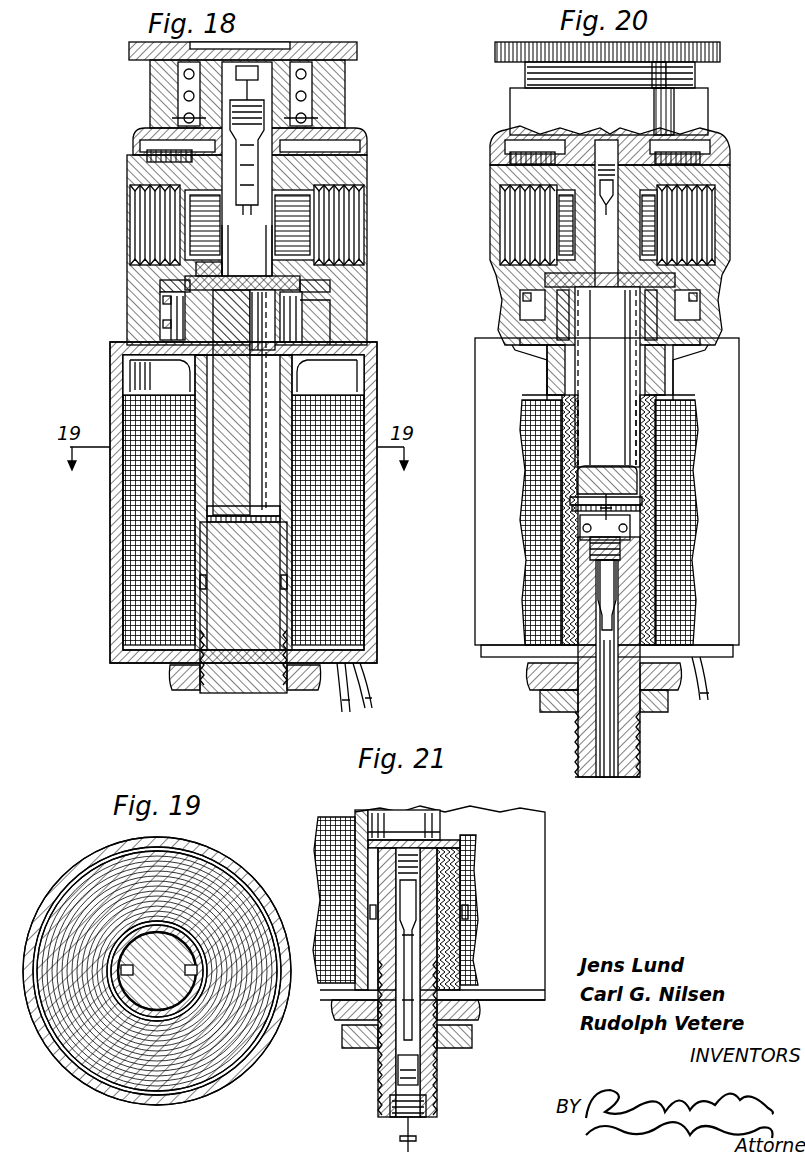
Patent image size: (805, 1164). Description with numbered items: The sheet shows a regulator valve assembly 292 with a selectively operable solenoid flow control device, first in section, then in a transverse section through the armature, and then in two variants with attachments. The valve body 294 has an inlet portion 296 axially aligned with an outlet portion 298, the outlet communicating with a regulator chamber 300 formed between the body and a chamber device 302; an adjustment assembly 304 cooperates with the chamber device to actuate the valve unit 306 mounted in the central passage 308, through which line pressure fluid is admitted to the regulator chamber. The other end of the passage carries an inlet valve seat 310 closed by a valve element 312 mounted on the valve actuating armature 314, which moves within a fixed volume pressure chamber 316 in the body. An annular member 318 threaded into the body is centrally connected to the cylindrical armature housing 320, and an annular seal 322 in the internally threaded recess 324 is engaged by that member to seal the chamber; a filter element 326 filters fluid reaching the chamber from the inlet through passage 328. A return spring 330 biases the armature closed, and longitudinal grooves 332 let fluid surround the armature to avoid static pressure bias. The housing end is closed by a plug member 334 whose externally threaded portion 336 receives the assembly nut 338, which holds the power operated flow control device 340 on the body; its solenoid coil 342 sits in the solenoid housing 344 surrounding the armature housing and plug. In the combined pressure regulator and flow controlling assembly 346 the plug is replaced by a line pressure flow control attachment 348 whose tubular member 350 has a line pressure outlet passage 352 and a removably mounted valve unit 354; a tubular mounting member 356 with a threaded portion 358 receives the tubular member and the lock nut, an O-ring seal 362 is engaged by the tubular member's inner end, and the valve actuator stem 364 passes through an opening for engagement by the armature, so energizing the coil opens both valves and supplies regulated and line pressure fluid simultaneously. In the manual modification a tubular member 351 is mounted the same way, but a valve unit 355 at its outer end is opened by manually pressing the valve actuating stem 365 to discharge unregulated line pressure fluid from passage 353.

In FIG. 18, the regulator valve assembly 292 is at (105, 138).
In FIG. 18, the valve body 294 is at (160, 300).
In FIG. 18, the inlet portion 296 is at (135, 228).
In FIG. 20, the inlet portion 296 is at (506, 198).
In FIG. 18, the outlet portion 298 is at (333, 237).
In FIG. 20, the outlet portion 298 is at (712, 208).
In FIG. 18, the regulator chamber 300 is at (322, 168).
In FIG. 18, the chamber device 302 is at (250, 66).
In FIG. 18, the adjustment assembly 304 is at (340, 42).
In FIG. 18, the valve unit 306 is at (300, 142).
In FIG. 20, the valve unit 306 is at (612, 160).
In FIG. 18, the central passage 308 is at (238, 222).
In FIG. 18, the inlet valve seat 310 is at (248, 320).
In FIG. 20, the inlet valve seat 310 is at (606, 290).
In FIG. 18, the valve element 312 is at (244, 401).
In FIG. 18, the valve actuating armature 314 is at (252, 300).
In FIG. 20, the valve actuating armature 314 is at (604, 476).
In FIG. 19, the valve actuating armature 314 is at (172, 990).
In FIG. 21, the valve actuating armature 314 is at (402, 815).
In FIG. 18, the fixed volume pressure chamber 316 is at (172, 314).
In FIG. 20, the fixed volume pressure chamber 316 is at (640, 312).
In FIG. 18, the annular member 318 is at (305, 360).
In FIG. 18, the armature housing 320 is at (290, 426).
In FIG. 20, the armature housing 320 is at (640, 462).
In FIG. 19, the armature housing 320 is at (156, 931).
In FIG. 18, the annular seal 322 is at (320, 300).
In FIG. 18, the internally threaded recess 324 is at (162, 284).
In FIG. 18, the filter element 326 is at (196, 268).
In FIG. 18, the passage 328 is at (216, 270).
In FIG. 18, the return spring 330 is at (300, 322).
In FIG. 18, the longitudinal grooves 332 is at (210, 462).
In FIG. 20, the longitudinal grooves 332 is at (575, 486).
In FIG. 19, the longitudinal grooves 332 is at (198, 971).
In FIG. 18, the plug member 334 is at (238, 680).
In FIG. 18, the externally threaded portion 336 is at (295, 682).
In FIG. 18, the assembly nut 338 is at (180, 682).
In FIG. 20, the assembly nut 338 is at (545, 678).
In FIG. 21, the assembly nut 338 is at (338, 1022).
In FIG. 18, the power operated flow control device 340 is at (380, 518).
In FIG. 20, the power operated flow control device 340 is at (468, 612).
In FIG. 21, the power operated flow control device 340 is at (543, 904).
In FIG. 18, the solenoid coil 342 is at (150, 548).
In FIG. 20, the solenoid coil 342 is at (672, 593).
In FIG. 19, the solenoid coil 342 is at (302, 845).
In FIG. 21, the solenoid coil 342 is at (325, 863).
In FIG. 18, the solenoid housing 344 is at (378, 574).
In FIG. 20, the solenoid housing 344 is at (720, 606).
In FIG. 19, the solenoid housing 344 is at (80, 870).
In FIG. 20, the combined pressure regulator and flow controlling assembly 346 is at (732, 136).
In FIG. 20, the line pressure flow control attachment 348 is at (586, 784).
In FIG. 20, the tubular member 350 is at (628, 745).
In FIG. 21, the tubular member 351 is at (428, 1052).
In FIG. 20, the line pressure outlet passage 352 is at (610, 750).
In FIG. 21, the passage 353 is at (408, 1000).
In FIG. 20, the valve unit 354 is at (610, 588).
In FIG. 21, the valve unit 355 is at (400, 1072).
In FIG. 20, the tubular mounting member 356 is at (643, 618).
In FIG. 21, the tubular mounting member 356 is at (443, 934).
In FIG. 20, the threaded portion 358 is at (656, 708).
In FIG. 20, the O-ring seal 362 is at (630, 530).
In FIG. 20, the valve actuator stem 364 is at (612, 500).
In FIG. 21, the valve actuating stem 365 is at (412, 1132).